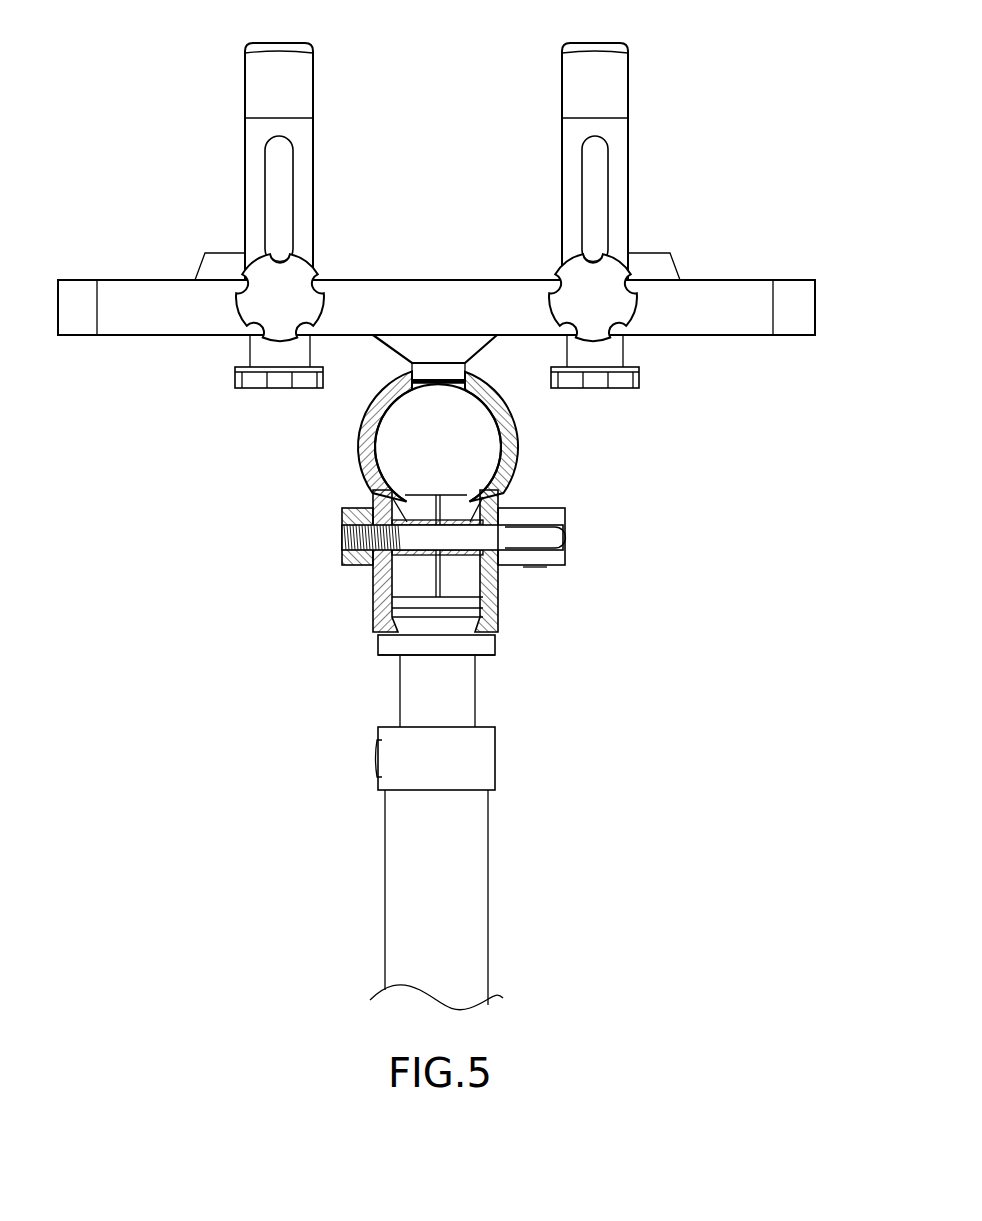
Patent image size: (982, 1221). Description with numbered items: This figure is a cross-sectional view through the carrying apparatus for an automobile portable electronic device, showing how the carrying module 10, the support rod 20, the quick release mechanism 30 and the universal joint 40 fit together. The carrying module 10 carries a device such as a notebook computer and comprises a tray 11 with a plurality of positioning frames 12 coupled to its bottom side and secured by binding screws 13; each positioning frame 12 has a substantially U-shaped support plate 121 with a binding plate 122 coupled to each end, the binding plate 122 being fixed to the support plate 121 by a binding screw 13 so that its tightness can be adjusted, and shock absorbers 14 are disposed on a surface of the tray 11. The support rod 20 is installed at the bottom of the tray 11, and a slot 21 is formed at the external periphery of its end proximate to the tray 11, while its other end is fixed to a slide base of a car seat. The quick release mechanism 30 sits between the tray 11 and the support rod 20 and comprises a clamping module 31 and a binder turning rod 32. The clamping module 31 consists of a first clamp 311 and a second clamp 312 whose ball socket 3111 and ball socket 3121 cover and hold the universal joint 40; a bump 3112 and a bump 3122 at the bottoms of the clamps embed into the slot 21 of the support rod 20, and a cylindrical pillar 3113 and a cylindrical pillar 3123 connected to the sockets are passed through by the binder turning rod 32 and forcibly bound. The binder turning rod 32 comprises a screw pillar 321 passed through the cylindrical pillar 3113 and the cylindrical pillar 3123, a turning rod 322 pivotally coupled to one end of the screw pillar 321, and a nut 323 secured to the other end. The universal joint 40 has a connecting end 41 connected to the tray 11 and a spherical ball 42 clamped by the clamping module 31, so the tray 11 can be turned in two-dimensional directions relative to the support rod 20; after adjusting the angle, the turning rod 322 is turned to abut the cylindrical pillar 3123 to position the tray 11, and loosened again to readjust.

The carrying module 10 is at (437, 229).
The tray 11 is at (437, 290).
The positioning frame 12 is at (385, 229).
The support plate 121 is at (258, 345).
The binding plate 122 is at (253, 136).
The binding screw 13 is at (247, 298).
The shock absorber 14 is at (652, 258).
The support rod 20 is at (475, 830).
The slot 21 is at (452, 650).
The quick release mechanism 30 is at (471, 516).
The clamping module 31 is at (442, 516).
The first clamp 311 is at (439, 516).
The ball socket 3111 is at (363, 460).
The bump 3112 is at (373, 620).
The cylindrical pillar 3113 is at (342, 525).
The second clamp 312 is at (496, 636).
The ball socket 3121 is at (500, 455).
The bump 3122 is at (495, 640).
The cylindrical pillar 3123 is at (462, 560).
The binder turning rod 32 is at (461, 555).
The screw pillar 321 is at (352, 537).
The turning rod 322 is at (563, 510).
The nut 323 is at (342, 558).
The universal joint 40 is at (382, 418).
The connecting end 41 is at (380, 350).
The spherical ball 42 is at (392, 425).